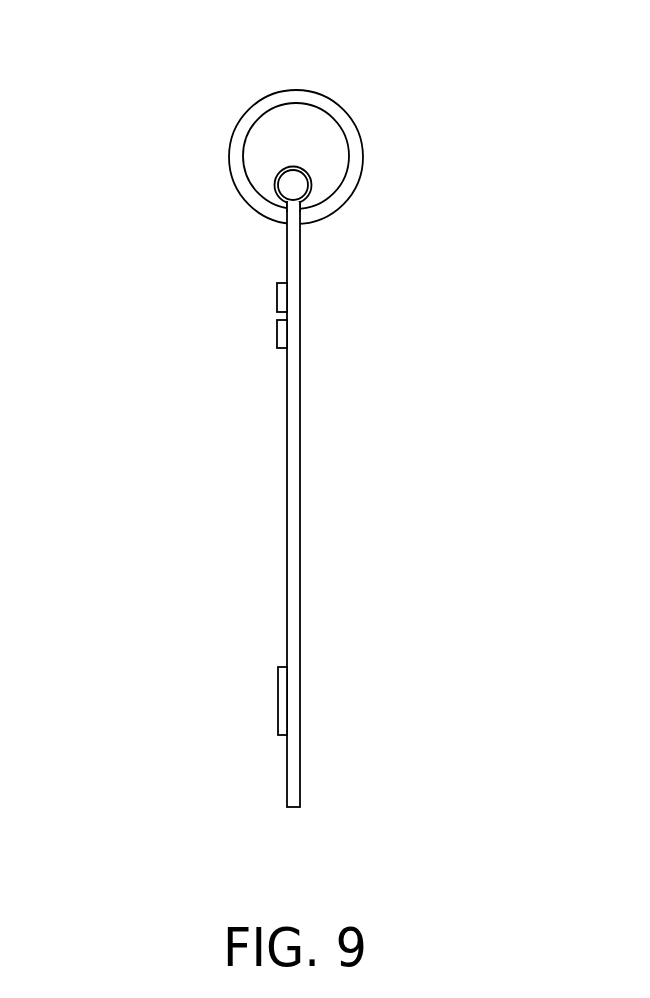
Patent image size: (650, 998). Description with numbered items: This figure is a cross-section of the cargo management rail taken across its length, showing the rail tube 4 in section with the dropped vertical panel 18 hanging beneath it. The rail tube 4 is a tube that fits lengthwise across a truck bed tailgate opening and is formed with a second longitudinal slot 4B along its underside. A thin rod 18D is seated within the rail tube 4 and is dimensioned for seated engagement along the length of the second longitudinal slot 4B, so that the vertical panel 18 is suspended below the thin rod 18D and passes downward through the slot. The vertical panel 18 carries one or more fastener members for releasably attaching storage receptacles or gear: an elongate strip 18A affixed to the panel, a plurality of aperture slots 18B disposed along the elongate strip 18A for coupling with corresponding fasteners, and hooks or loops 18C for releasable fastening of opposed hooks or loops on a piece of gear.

The rail tube 4 is at (318, 102).
The second longitudinal slot 4B is at (256, 213).
The dropped vertical panel 18 is at (386, 444).
The elongate strip 18A is at (277, 290).
The aperture slots 18B is at (255, 328).
The hooks or loops 18C is at (278, 702).
The thin rod 18D is at (297, 190).